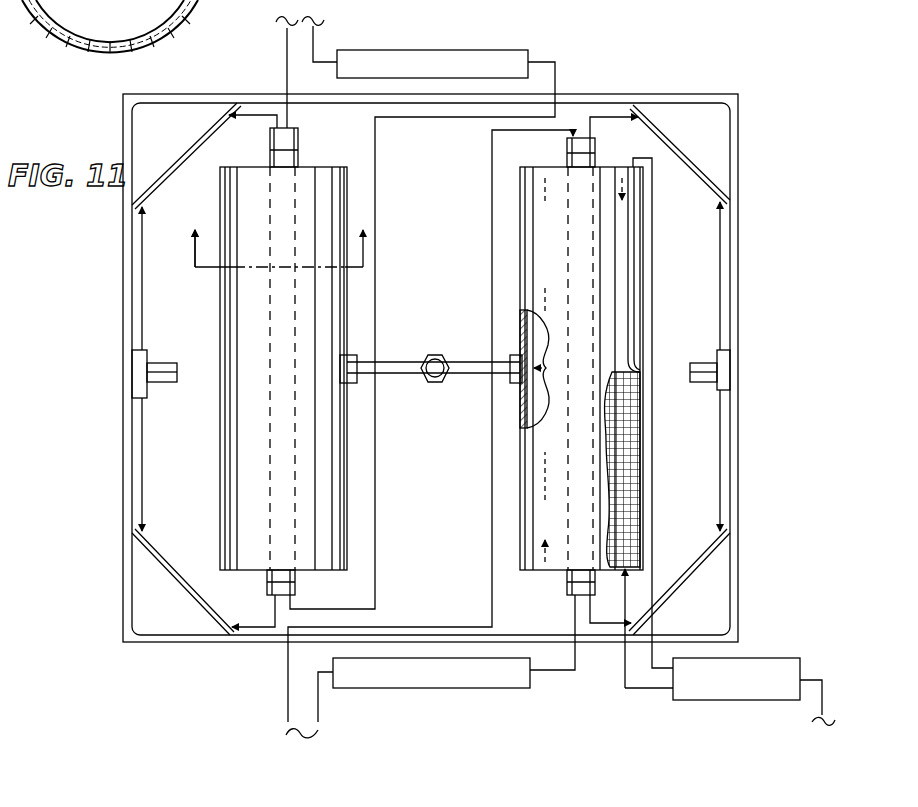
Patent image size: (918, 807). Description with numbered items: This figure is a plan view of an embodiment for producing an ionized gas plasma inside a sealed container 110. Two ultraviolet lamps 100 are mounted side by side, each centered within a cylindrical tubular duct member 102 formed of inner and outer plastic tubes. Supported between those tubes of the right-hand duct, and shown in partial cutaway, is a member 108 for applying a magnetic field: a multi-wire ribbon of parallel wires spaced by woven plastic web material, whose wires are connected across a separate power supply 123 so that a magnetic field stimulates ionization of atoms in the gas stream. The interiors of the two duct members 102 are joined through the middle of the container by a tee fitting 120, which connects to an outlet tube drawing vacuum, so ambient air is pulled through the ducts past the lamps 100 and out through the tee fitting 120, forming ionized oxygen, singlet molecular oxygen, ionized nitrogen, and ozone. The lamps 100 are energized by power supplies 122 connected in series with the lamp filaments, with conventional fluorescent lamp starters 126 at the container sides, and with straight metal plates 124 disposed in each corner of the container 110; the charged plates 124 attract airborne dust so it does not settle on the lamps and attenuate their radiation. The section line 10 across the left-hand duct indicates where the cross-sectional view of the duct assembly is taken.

The section line 10 is at (283, 248).
The ultraviolet lamp 100 is at (300, 156).
The tubular duct member 102 is at (232, 440).
The magnetic field member 108 is at (624, 452).
The sealed container 110 is at (740, 292).
The tee fitting 120 is at (428, 376).
The power supply 122 is at (480, 49).
The separate power supply 123 is at (758, 660).
The metal plate 124 is at (200, 130).
The fluorescent lamp starter 126 is at (134, 364).